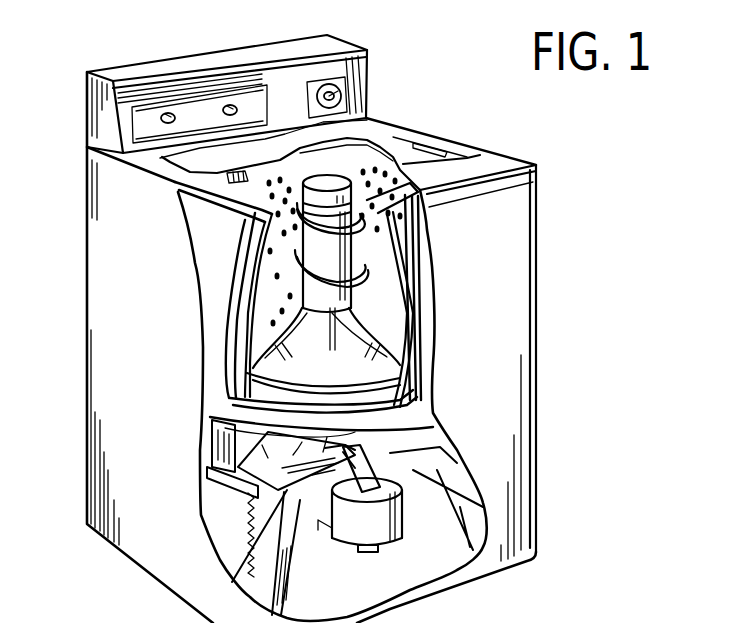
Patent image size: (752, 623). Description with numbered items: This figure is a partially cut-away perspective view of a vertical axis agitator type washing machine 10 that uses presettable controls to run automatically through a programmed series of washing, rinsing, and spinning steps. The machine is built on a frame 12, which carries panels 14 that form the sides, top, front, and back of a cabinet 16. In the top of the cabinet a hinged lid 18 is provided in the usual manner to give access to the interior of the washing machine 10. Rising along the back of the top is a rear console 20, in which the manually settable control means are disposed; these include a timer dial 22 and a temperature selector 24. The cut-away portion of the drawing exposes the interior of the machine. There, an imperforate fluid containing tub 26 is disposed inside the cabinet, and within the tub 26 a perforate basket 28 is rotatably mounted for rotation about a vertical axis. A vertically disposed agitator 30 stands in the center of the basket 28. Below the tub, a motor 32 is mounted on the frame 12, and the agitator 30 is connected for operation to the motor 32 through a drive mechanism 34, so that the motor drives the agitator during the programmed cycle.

The washing machine 10 is at (458, 130).
The frame 12 is at (278, 590).
The panels 14 is at (502, 162).
The cabinet 16 is at (540, 191).
The hinged lid 18 is at (398, 142).
The rear console 20 is at (300, 47).
The timer dial 22 is at (340, 97).
The temperature selector 24 is at (169, 115).
The tub 26 is at (428, 282).
The perforate basket 28 is at (431, 254).
The agitator 30 is at (312, 296).
The motor 32 is at (410, 522).
The drive mechanism 34 is at (320, 523).